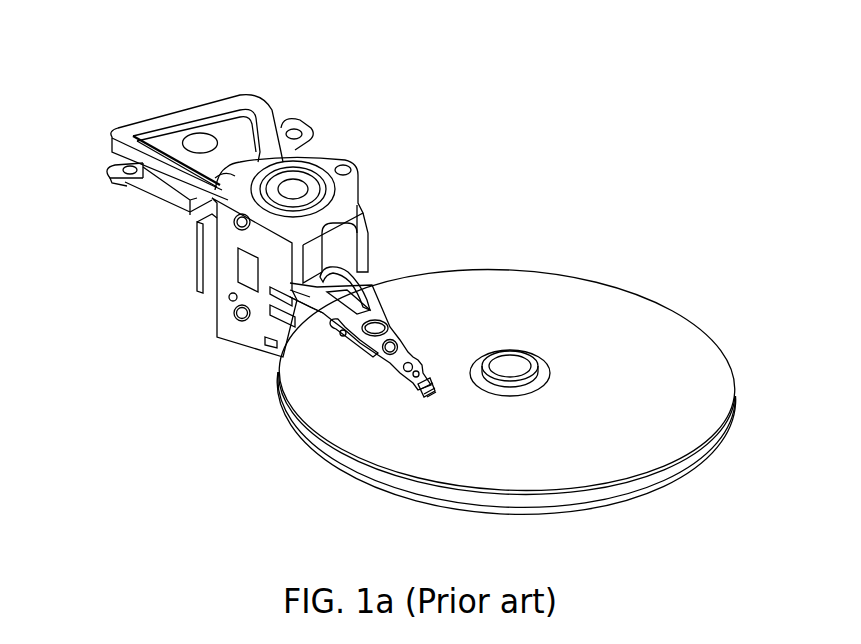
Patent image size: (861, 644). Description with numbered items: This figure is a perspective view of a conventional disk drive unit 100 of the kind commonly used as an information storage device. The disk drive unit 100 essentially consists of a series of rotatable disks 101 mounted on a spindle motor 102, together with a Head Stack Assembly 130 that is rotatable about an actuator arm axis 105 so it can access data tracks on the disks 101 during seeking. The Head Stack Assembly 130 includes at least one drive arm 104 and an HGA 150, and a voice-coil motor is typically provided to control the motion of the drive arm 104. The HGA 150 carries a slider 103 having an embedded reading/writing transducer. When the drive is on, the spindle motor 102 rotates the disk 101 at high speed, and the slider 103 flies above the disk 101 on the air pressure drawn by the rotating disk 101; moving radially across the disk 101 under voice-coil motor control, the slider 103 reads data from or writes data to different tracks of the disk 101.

The disk drive unit 100 is at (65, 45).
The disk 101 is at (623, 355).
The spindle motor 102 is at (513, 367).
The slider 103 is at (425, 385).
The drive arm 104 is at (372, 308).
The actuator arm axis 105 is at (292, 190).
The Head Stack Assembly 130 is at (352, 218).
The HGA 150 is at (403, 350).